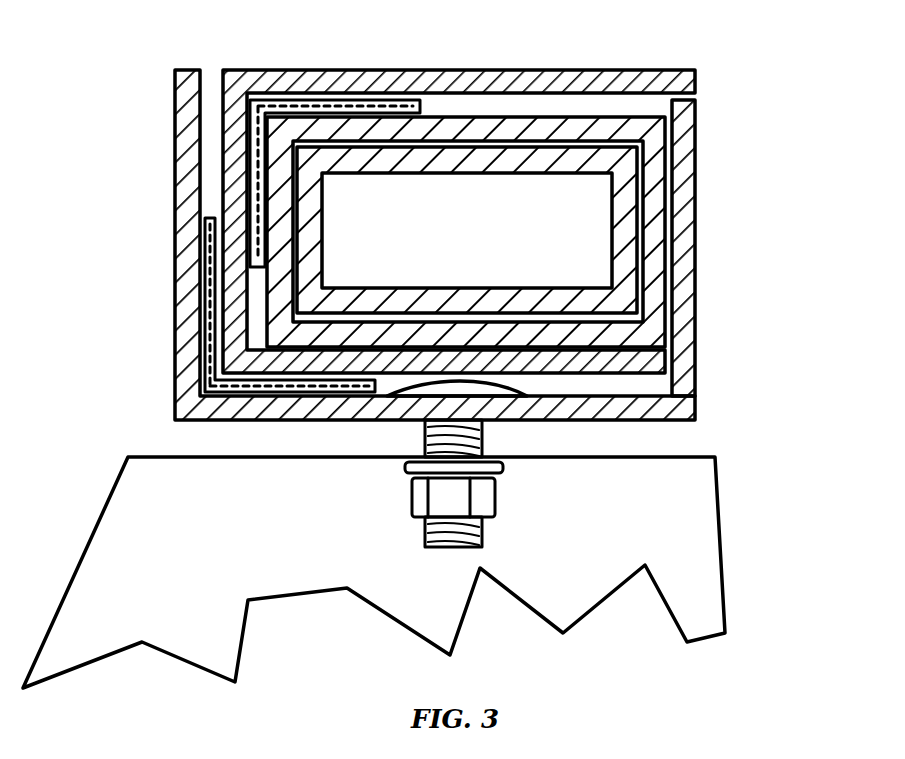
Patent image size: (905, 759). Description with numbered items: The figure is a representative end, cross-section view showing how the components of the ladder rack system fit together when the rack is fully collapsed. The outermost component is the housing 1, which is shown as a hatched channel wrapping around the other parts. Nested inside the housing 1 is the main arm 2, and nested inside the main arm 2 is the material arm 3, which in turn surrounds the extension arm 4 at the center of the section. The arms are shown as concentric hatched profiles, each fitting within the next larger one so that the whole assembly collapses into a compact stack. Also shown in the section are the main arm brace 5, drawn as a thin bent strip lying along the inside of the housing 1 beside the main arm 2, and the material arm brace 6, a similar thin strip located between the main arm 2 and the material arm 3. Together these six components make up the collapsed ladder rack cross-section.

The housing 1 is at (683, 240).
The main arm 2 is at (332, 72).
The material arm 3 is at (660, 291).
The extension arm 4 is at (538, 160).
The main arm brace 5 is at (205, 293).
The material arm brace 6 is at (225, 161).